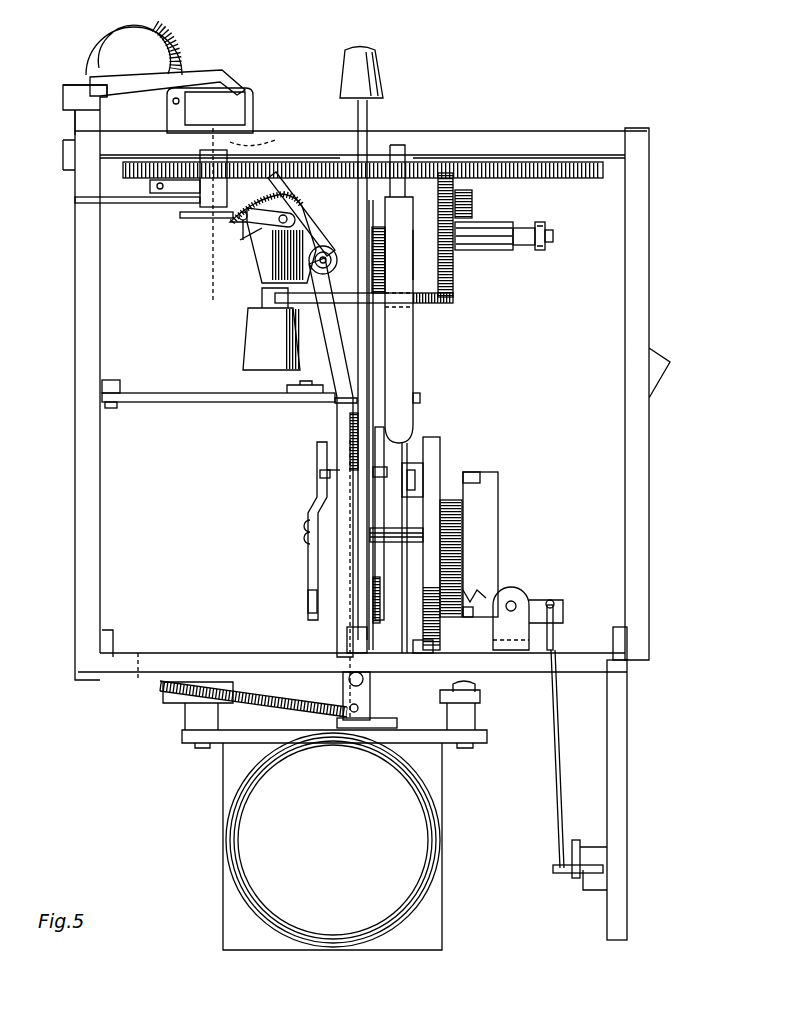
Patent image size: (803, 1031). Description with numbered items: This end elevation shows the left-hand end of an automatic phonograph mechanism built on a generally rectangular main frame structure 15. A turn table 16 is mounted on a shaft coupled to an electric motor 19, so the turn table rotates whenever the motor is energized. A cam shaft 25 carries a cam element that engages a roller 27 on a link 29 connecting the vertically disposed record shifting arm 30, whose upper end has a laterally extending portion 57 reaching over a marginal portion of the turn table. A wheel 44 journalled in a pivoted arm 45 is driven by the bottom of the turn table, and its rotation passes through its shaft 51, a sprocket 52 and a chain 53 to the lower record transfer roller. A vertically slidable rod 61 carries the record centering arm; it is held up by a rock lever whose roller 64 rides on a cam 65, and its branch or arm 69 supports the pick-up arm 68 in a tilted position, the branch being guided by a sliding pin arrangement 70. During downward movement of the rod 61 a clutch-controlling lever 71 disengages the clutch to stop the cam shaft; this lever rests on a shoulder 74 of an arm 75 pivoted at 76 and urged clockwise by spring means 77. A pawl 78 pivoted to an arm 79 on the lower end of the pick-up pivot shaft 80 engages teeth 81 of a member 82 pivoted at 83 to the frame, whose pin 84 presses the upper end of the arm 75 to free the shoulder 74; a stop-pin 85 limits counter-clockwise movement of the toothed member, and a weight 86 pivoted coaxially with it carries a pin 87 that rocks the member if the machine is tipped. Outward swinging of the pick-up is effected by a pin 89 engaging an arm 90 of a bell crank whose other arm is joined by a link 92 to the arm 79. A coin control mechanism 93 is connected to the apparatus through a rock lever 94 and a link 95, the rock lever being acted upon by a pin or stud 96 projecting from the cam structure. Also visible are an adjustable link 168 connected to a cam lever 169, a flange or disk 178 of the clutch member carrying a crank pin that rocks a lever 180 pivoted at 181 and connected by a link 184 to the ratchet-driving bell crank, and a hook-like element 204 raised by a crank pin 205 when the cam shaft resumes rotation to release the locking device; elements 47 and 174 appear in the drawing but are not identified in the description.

The main frame structure 15 is at (322, 222).
The turn table 16 is at (578, 178).
The electric motor 19 is at (440, 836).
The cam shaft 25 is at (420, 530).
The roller 27 is at (425, 503).
The link 29 is at (406, 470).
The record shifting arm 30 is at (408, 376).
The wheel 44 is at (453, 275).
The arm 45 is at (473, 206).
The rack 47 is at (453, 304).
The shaft 51 is at (553, 236).
The sprocket 52 is at (540, 250).
The chain 53 is at (546, 250).
The laterally extending portion 57 is at (398, 140).
The rod 61 is at (373, 337).
The roller 64 is at (424, 653).
The cam 65 is at (435, 637).
The pick-up arm 68 is at (190, 76).
The branch arm 69 is at (63, 95).
The sliding pin arrangement 70 is at (75, 128).
The clutch-controlling lever 71 is at (352, 447).
The shoulder 74 is at (352, 474).
The arm 75 is at (335, 342).
The pivot 76 is at (350, 675).
The spring means 77 is at (275, 705).
The pawl 78 is at (172, 205).
The arm 79 is at (186, 210).
The shaft 80 is at (245, 208).
The teeth 81 is at (266, 200).
The toothed member 82 is at (252, 250).
The pivot 83 is at (309, 264).
The pin 84 is at (336, 232).
The stop-pin 85 is at (310, 218).
The weight 86 is at (245, 343).
The pin 87 is at (242, 236).
The pin 89 is at (400, 255).
The bell crank arm 90 is at (398, 255).
The link 92 is at (212, 220).
The coin control mechanism 93 is at (627, 746).
The rock lever 94 is at (525, 590).
The link 95 is at (556, 768).
The pin 96 is at (470, 617).
The adjustable link 168 is at (306, 548).
The cam lever 169 is at (310, 508).
The stop 174 is at (318, 476).
The flange or disk 178 is at (422, 407).
The lever 180 is at (186, 390).
The pivot 181 is at (113, 408).
The link 184 is at (287, 391).
The hook-like element 204 is at (498, 502).
The crank pin 205 is at (478, 476).